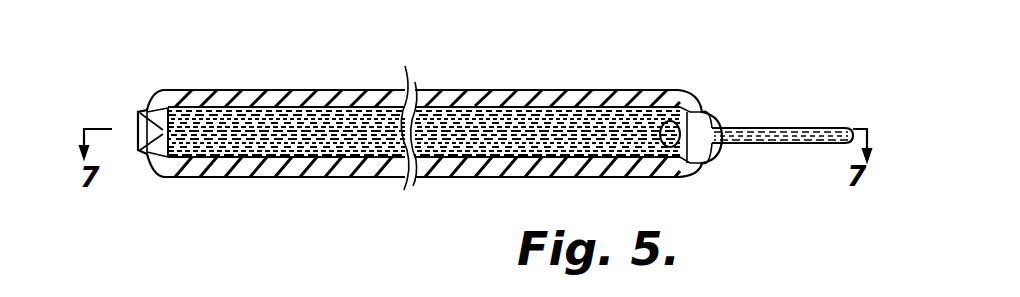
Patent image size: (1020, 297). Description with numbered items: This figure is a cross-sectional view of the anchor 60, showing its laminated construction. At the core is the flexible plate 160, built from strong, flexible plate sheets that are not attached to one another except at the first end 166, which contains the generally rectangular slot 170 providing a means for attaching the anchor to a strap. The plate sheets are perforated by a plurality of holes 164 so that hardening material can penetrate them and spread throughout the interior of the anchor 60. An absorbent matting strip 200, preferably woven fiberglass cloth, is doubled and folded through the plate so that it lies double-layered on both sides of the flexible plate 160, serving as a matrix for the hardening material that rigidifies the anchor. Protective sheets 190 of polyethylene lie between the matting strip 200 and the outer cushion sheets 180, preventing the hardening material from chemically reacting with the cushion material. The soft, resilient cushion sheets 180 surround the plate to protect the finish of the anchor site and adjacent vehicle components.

The anchor 60 is at (692, 100).
The flexible plate 160 is at (740, 127).
The holes 164 is at (213, 110).
The first end 166 is at (848, 127).
The slot 170 is at (810, 145).
The cushion sheets 180 is at (553, 101).
The protective sheets 190 is at (405, 186).
The matting strip 200 is at (405, 66).